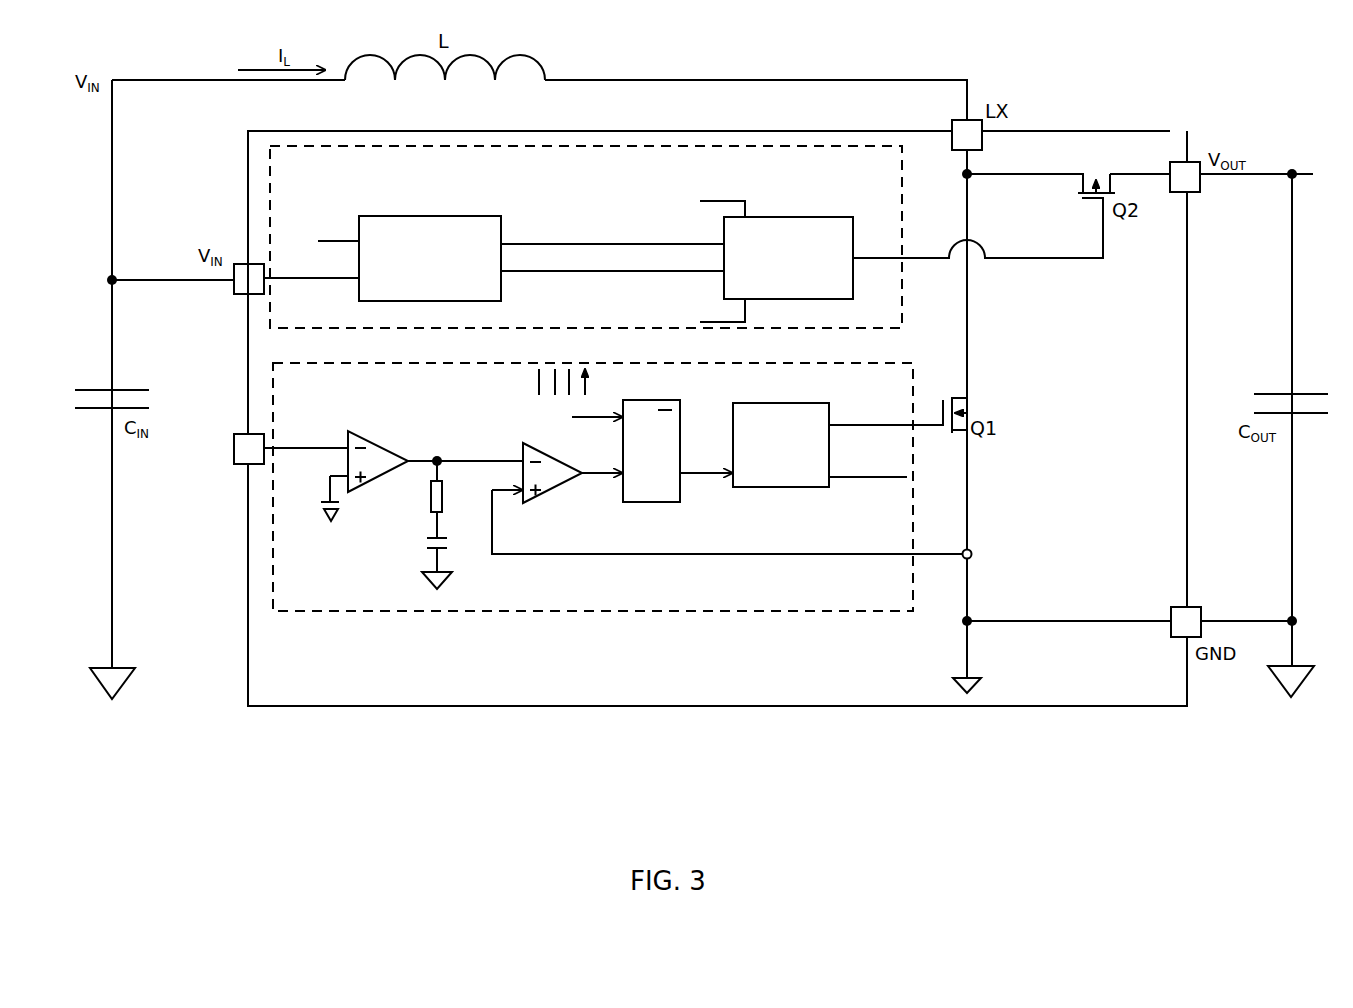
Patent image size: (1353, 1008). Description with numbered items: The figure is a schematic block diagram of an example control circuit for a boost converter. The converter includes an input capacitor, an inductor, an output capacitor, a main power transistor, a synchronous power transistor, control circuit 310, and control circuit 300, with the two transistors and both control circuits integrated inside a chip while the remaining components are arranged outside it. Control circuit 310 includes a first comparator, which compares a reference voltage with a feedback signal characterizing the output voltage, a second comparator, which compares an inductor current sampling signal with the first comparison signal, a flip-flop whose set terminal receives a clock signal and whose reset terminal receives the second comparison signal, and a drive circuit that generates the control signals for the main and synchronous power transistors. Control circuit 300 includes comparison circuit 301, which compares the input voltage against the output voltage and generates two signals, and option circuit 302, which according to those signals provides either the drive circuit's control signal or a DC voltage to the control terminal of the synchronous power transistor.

The control circuit 300 is at (583, 237).
The comparison circuit 301 is at (428, 216).
The option circuit 302 is at (765, 217).
The control circuit 310 is at (576, 487).